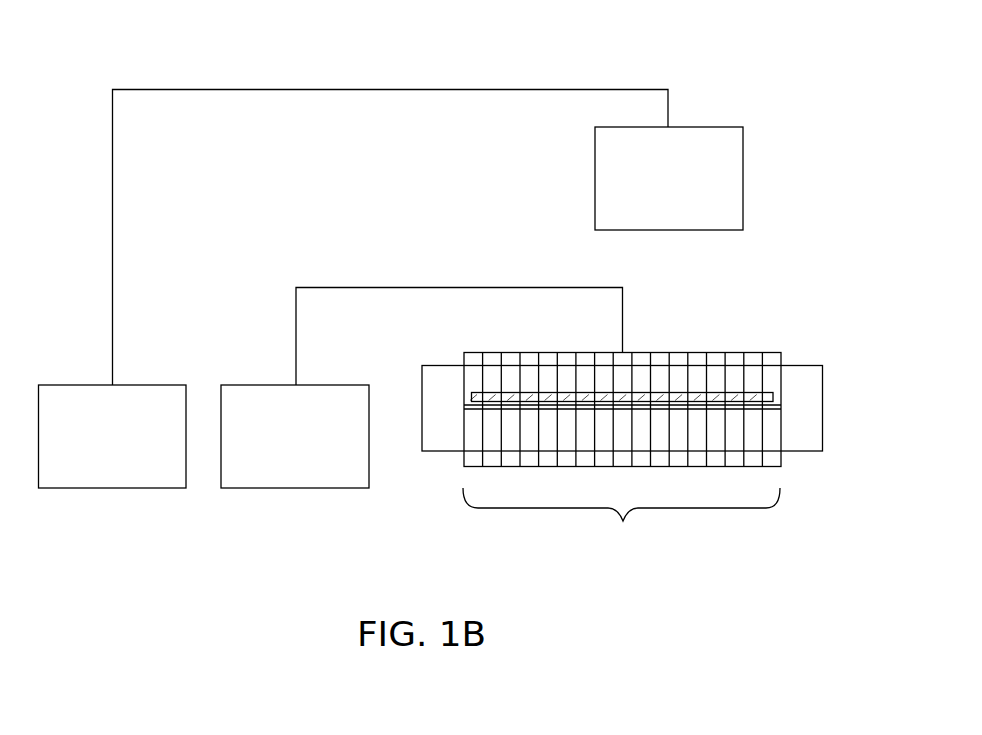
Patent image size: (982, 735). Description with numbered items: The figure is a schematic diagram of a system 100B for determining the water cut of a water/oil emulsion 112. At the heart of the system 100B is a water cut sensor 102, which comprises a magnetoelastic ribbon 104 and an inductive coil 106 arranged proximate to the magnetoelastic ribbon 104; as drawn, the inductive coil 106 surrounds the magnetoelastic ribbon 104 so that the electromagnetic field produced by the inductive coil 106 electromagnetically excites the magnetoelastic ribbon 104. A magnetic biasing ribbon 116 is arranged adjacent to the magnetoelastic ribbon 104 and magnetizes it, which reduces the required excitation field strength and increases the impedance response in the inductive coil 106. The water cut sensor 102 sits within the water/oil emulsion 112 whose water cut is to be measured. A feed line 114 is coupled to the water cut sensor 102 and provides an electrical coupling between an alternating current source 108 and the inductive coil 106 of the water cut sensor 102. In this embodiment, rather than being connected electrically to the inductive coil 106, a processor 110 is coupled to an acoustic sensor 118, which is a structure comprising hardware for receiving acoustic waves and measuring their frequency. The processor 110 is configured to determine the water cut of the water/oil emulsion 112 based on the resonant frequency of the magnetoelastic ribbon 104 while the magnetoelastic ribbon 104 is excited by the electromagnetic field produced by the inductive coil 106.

The system 100B is at (753, 66).
The water cut sensor 102 is at (621, 519).
The magnetoelastic ribbon 104 is at (773, 407).
The inductive coil 106 is at (650, 352).
The alternating current source 108 is at (295, 488).
The processor 110 is at (106, 488).
The water/oil emulsion 112 is at (448, 430).
The feed line 114 is at (423, 286).
The magnetic biasing ribbon 116 is at (767, 393).
The acoustic sensor 118 is at (646, 191).